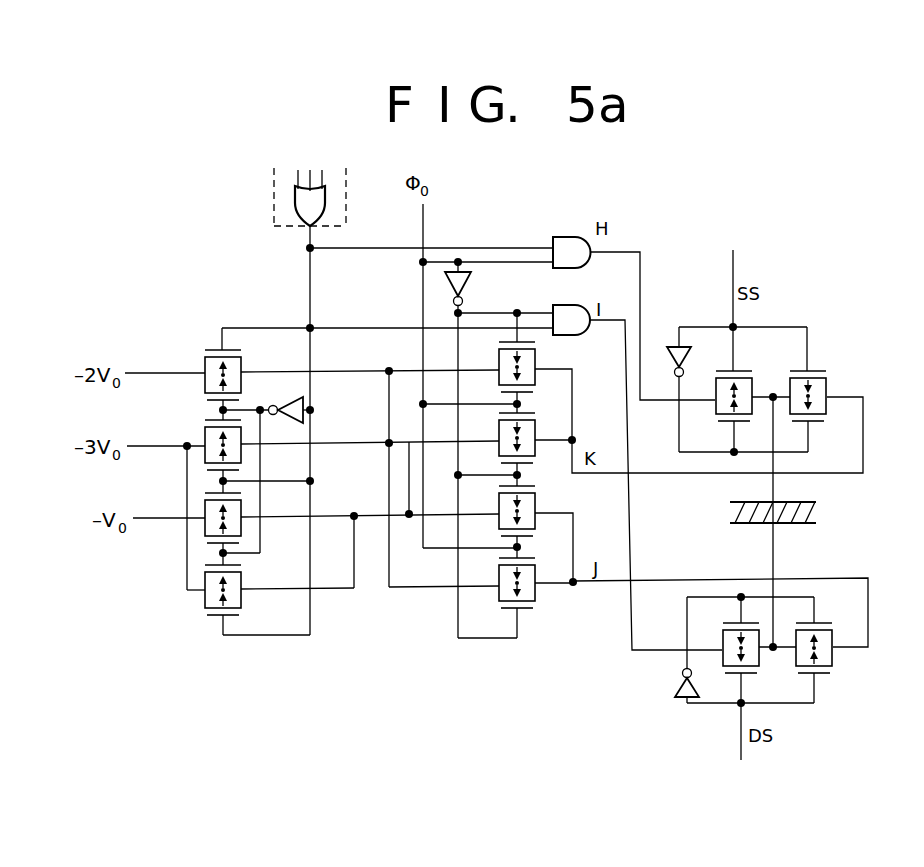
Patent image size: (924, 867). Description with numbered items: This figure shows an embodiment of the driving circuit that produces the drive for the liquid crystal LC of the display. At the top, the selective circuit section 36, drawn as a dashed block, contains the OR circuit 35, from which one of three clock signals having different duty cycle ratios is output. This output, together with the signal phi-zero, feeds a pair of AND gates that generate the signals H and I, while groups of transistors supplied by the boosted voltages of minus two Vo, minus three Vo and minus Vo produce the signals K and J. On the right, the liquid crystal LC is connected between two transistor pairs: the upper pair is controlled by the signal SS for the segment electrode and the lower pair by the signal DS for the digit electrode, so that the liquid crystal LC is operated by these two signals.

The OR circuit 35 is at (310, 198).
The selective circuit section 36 is at (274, 226).
The liquid crystal LC is at (818, 504).